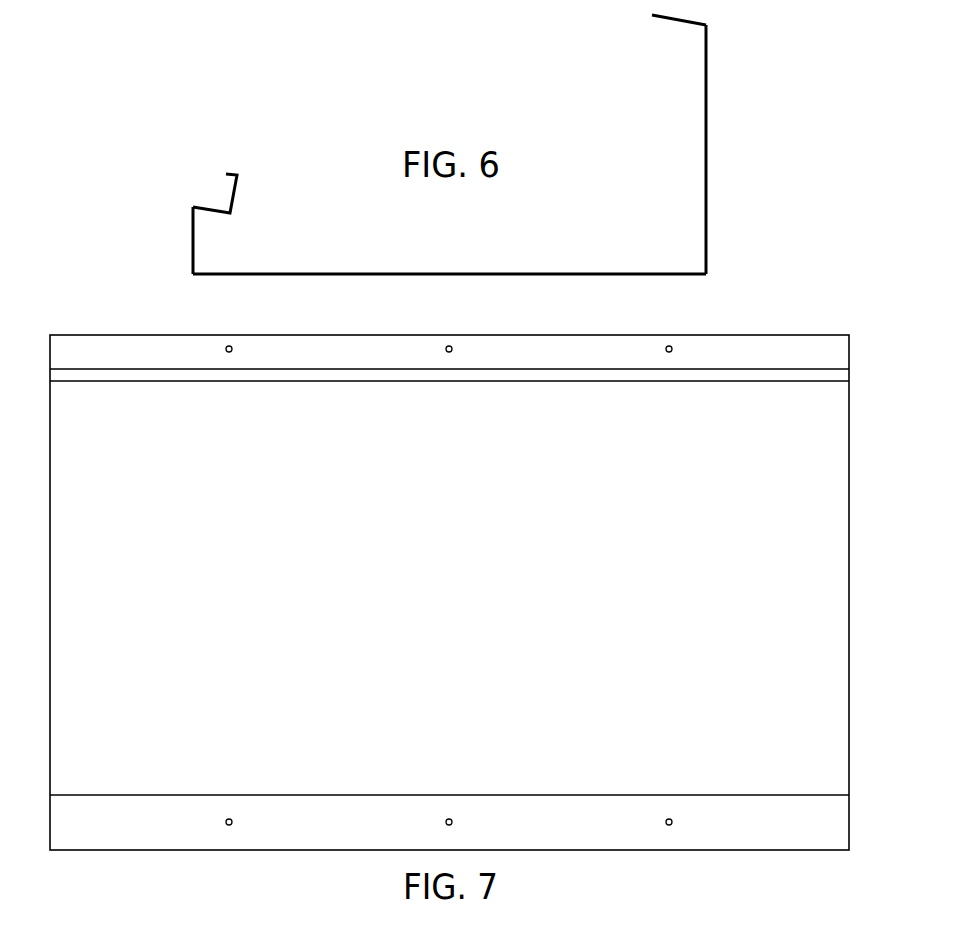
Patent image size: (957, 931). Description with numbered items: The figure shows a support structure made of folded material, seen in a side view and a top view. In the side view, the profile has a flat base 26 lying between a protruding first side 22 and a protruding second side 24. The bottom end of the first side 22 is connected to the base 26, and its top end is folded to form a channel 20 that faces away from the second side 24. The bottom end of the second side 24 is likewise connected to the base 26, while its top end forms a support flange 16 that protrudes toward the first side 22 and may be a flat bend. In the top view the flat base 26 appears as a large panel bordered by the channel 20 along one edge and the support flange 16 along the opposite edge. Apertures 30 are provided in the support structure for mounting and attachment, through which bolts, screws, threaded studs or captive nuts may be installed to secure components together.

In FIG. 6, the support flange 16 is at (677, 24).
In FIG. 7, the support flange 16 is at (792, 832).
In FIG. 6, the channel 20 is at (233, 185).
In FIG. 7, the channel 20 is at (821, 352).
In FIG. 6, the first side 22 is at (193, 237).
In FIG. 6, the second side 24 is at (706, 147).
In FIG. 6, the base 26 is at (375, 275).
In FIG. 7, the base 26 is at (778, 524).
In FIG. 7, the apertures 30 is at (672, 348).